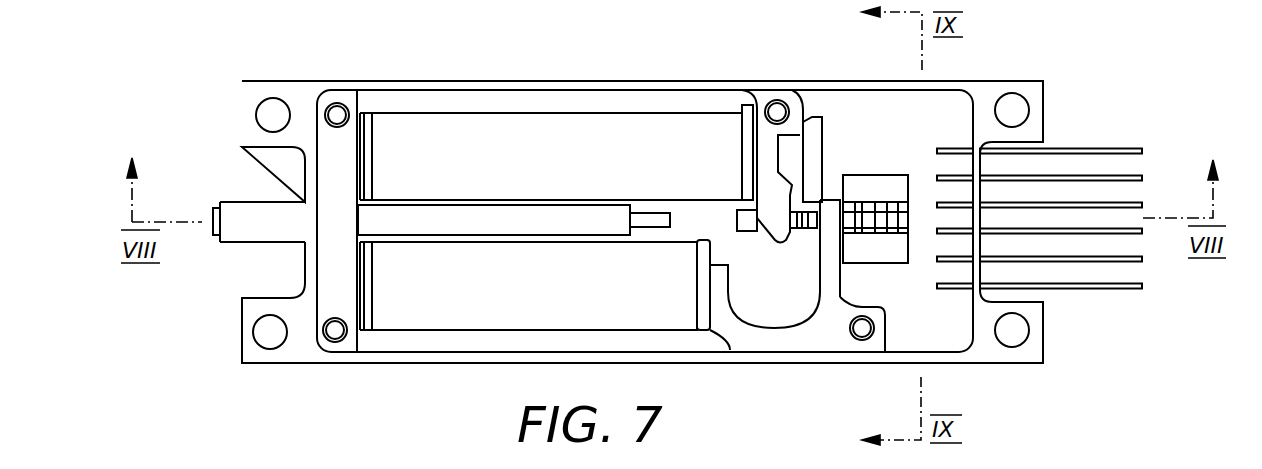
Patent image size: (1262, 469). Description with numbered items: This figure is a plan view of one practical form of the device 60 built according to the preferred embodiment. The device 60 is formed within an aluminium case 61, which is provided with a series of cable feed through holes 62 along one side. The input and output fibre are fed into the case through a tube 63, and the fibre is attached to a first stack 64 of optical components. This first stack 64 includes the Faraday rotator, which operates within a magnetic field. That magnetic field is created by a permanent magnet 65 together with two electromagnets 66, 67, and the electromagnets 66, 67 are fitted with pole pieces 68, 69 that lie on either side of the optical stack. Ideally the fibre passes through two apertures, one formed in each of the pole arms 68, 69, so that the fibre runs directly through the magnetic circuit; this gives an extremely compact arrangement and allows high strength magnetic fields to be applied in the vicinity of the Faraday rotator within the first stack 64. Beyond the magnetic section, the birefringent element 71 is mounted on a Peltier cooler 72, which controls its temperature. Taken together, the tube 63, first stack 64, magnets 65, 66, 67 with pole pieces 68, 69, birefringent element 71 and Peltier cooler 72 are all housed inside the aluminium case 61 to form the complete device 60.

The device 60 is at (187, 73).
The aluminium case 61 is at (452, 82).
The cable feed through holes 62 is at (1083, 292).
The tube 63 is at (230, 243).
The first stack of optical components 64 is at (798, 236).
The permanent magnet 65 is at (823, 132).
The electromagnet 66 is at (556, 152).
The electromagnet 67 is at (535, 285).
The pole piece 68 is at (773, 242).
The pole piece 69 is at (828, 195).
The birefringent element 71 is at (878, 223).
The Peltier cooler 72 is at (877, 265).